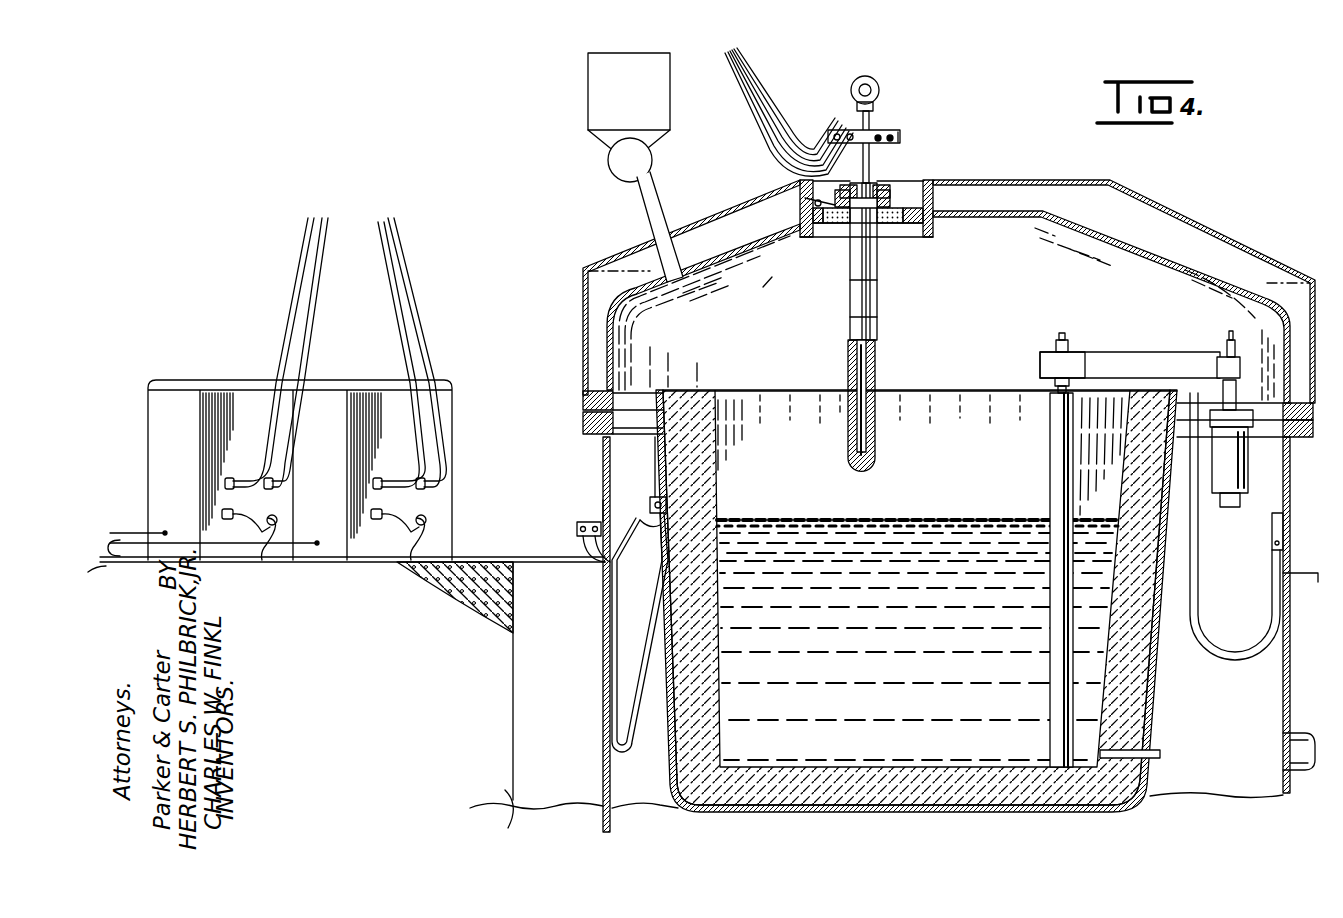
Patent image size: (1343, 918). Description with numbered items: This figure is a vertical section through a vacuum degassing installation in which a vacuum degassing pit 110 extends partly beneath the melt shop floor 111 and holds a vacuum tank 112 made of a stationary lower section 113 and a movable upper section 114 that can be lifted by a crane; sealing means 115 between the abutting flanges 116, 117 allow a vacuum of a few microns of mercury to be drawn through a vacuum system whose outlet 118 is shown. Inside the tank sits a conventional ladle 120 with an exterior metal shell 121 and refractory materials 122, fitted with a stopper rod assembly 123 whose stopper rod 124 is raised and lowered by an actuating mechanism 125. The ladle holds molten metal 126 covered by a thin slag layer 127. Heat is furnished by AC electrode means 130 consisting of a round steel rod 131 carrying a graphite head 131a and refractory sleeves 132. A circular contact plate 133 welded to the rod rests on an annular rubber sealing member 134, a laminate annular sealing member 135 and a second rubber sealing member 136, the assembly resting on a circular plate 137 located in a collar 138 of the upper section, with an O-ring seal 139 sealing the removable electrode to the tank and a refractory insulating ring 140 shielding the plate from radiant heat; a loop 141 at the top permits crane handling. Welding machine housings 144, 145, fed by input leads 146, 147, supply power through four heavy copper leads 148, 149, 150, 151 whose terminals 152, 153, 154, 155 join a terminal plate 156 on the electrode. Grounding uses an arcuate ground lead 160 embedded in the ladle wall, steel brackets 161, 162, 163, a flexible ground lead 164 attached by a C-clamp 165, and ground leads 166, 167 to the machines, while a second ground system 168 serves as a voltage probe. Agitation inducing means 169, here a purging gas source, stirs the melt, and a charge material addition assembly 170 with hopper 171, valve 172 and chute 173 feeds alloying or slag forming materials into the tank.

The vacuum degassing pit 110 is at (509, 815).
The melt shop floor 111 is at (595, 560).
The vacuum tank 112 is at (1241, 228).
The stationary lower section 113 is at (603, 825).
The movable upper section 114 is at (607, 328).
The sealing means 115 is at (585, 437).
The flange 116 is at (583, 422).
The flange 117 is at (583, 400).
The vacuum system outlet 118 is at (1300, 772).
The molten metal receptacle 120 is at (765, 822).
The exterior metal shell 121 is at (692, 812).
The refractory materials 122 is at (858, 810).
The stopper rod assembly 123 is at (1146, 348).
The stopper rod 124 is at (1050, 470).
The actuating mechanism 125 is at (1255, 520).
The molten metal 126 is at (930, 745).
The slag layer 127 is at (952, 520).
The electrode means 130 is at (888, 334).
The steel rod 131 is at (857, 348).
The graphite head 131a is at (877, 455).
The refractory sleeves 132 is at (878, 305).
The contact plate 133 is at (872, 190).
The annular rubber sealing member 134 is at (890, 192).
The annular sealing member 135 is at (805, 198).
The second annular rubber sealing member 136 is at (932, 210).
The circular plate 137 is at (812, 213).
The collar 138 is at (927, 192).
The O-ring seal 139 is at (915, 222).
The refractory insulating ring 140 is at (882, 226).
The loop 141 is at (872, 92).
The welding machine housing 144 is at (248, 385).
The welding machine housing 145 is at (437, 384).
The input lead 146 is at (140, 510).
The input lead 147 is at (138, 532).
The copper lead 148 is at (742, 76).
The copper lead 149 is at (745, 93).
The copper lead 150 is at (760, 124).
The copper lead 151 is at (397, 276).
The terminal 152 is at (835, 133).
The terminal 153 is at (836, 130).
The terminal 154 is at (879, 132).
The terminal 155 is at (891, 133).
The terminal plate 156 is at (900, 140).
The ground lead 160 is at (716, 500).
The steel bracket 161 is at (655, 480).
The steel bracket 162 is at (603, 500).
The steel bracket 163 is at (595, 514).
The flexible ground lead 164 is at (630, 748).
The C-clamp 165 is at (650, 548).
The ground lead 166 is at (578, 545).
The ground lead 167 is at (497, 558).
The second ground system 168 is at (1213, 660).
The agitation inducing means 169 is at (1142, 752).
The charge material addition assembly 170 is at (572, 144).
The hopper 171 is at (588, 85).
The valve 172 is at (648, 162).
The chute 173 is at (660, 207).